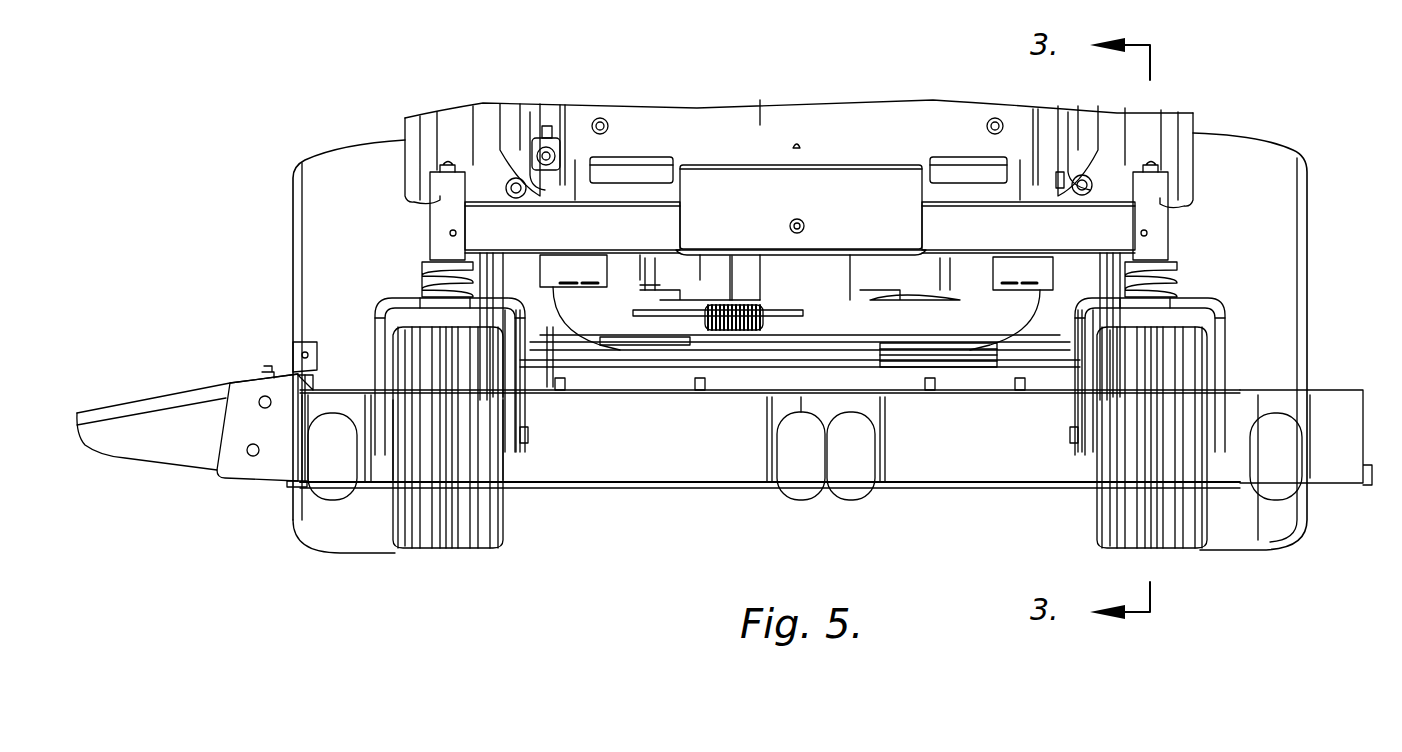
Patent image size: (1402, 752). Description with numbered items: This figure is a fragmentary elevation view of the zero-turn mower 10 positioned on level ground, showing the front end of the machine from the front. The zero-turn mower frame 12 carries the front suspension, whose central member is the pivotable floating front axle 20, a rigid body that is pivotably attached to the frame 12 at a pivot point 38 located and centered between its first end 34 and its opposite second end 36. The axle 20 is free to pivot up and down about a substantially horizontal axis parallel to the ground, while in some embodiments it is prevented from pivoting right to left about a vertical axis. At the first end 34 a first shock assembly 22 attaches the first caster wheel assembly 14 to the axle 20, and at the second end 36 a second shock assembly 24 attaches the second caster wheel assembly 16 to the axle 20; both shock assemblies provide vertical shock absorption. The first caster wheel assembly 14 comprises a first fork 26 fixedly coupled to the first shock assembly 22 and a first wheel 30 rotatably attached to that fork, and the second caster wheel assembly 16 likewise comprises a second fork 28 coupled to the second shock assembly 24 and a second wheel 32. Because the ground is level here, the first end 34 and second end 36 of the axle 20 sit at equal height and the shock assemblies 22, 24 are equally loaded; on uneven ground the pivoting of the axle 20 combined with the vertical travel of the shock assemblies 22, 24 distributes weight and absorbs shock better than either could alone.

The zero-turn mower 10 is at (300, 92).
The zero-turn mower frame 12 is at (747, 165).
The first caster wheel assembly 14 is at (385, 298).
The second caster wheel assembly 16 is at (1200, 298).
The floating front axle 20 is at (632, 223).
The first shock assembly 22 is at (437, 215).
The second shock assembly 24 is at (1160, 218).
The first fork 26 is at (518, 395).
The second fork 28 is at (1082, 404).
The first wheel 30 is at (475, 525).
The second wheel 32 is at (1110, 523).
The first end 34 is at (465, 222).
The second end 36 is at (1133, 222).
The pivot point 38 is at (803, 222).